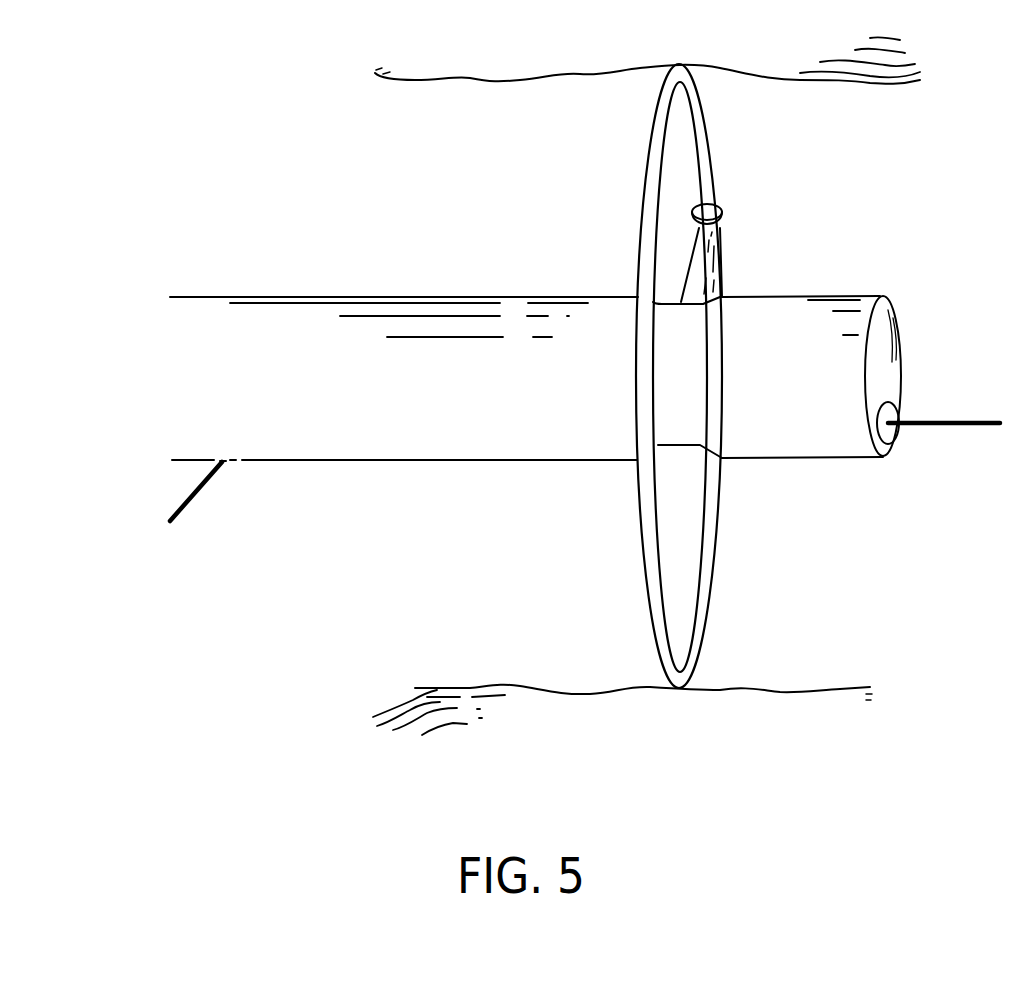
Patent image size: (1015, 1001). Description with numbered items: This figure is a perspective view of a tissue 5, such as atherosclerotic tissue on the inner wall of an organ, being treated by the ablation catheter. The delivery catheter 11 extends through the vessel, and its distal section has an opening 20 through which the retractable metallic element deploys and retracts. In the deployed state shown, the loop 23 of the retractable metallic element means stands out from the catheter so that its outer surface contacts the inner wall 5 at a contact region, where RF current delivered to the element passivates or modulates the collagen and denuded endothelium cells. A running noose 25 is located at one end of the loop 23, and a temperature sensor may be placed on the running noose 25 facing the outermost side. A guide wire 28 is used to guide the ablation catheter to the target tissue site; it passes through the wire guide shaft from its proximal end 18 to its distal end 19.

The tissue 5 is at (620, 62).
The delivery catheter 11 is at (300, 297).
The proximal end 18 is at (236, 472).
The distal end 19 is at (890, 408).
The opening 20 is at (672, 300).
The loop 23 is at (720, 571).
The running noose 25 is at (726, 213).
The guide wire 28 is at (946, 431).